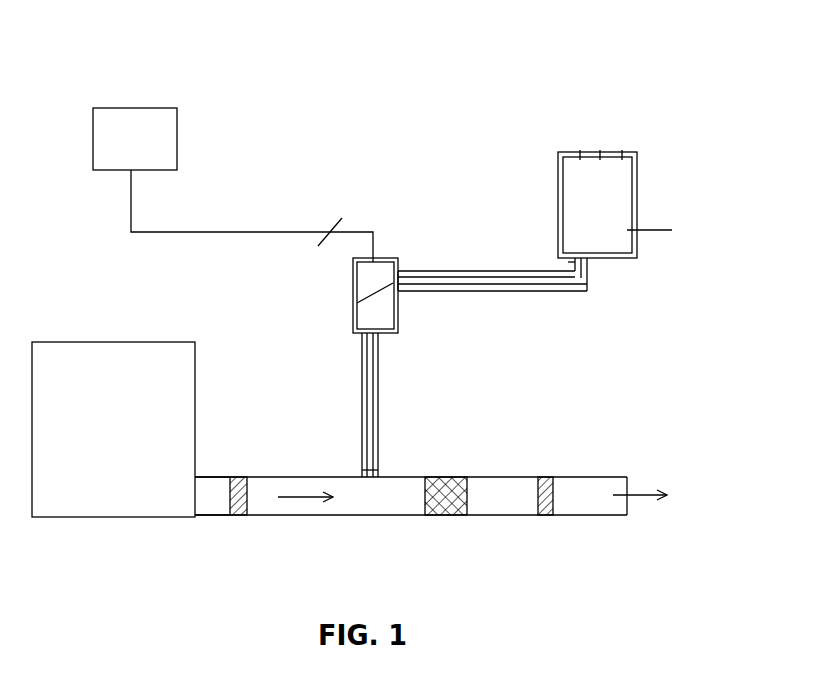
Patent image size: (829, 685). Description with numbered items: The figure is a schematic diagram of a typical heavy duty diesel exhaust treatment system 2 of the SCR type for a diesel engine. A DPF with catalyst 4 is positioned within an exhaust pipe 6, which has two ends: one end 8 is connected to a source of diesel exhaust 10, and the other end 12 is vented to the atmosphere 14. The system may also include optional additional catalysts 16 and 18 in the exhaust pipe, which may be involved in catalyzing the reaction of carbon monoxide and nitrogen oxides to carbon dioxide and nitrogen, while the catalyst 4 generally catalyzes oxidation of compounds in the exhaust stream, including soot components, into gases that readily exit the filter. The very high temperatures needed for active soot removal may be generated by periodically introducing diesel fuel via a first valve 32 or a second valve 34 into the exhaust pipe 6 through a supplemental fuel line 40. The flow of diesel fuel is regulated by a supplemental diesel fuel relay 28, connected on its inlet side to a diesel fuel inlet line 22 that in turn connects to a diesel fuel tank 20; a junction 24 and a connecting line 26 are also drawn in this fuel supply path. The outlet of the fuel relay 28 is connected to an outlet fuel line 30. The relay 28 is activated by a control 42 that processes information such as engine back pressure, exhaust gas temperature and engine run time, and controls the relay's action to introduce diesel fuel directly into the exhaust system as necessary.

The heavy duty diesel exhaust treatment system 2 is at (410, 70).
The DPF with catalyst 4 is at (437, 463).
The exhaust pipe 6 is at (285, 515).
The one end 8 is at (205, 474).
The source of diesel exhaust 10 is at (133, 340).
The other end 12 is at (630, 478).
The atmosphere 14 is at (672, 497).
The optional additional catalyst 16 is at (250, 472).
The optional additional catalyst 18 is at (545, 466).
The diesel fuel tank 20 is at (641, 197).
The diesel fuel inlet line 22 is at (590, 278).
The conduit junction 24 is at (568, 262).
The supply conduit 26 is at (399, 268).
The supplemental diesel fuel relay 28 is at (387, 253).
The outlet fuel line 30 is at (380, 368).
The first valve 32 is at (380, 336).
The second valve 34 is at (382, 470).
The supplemental fuel line 40 is at (510, 291).
The control 42 is at (180, 150).